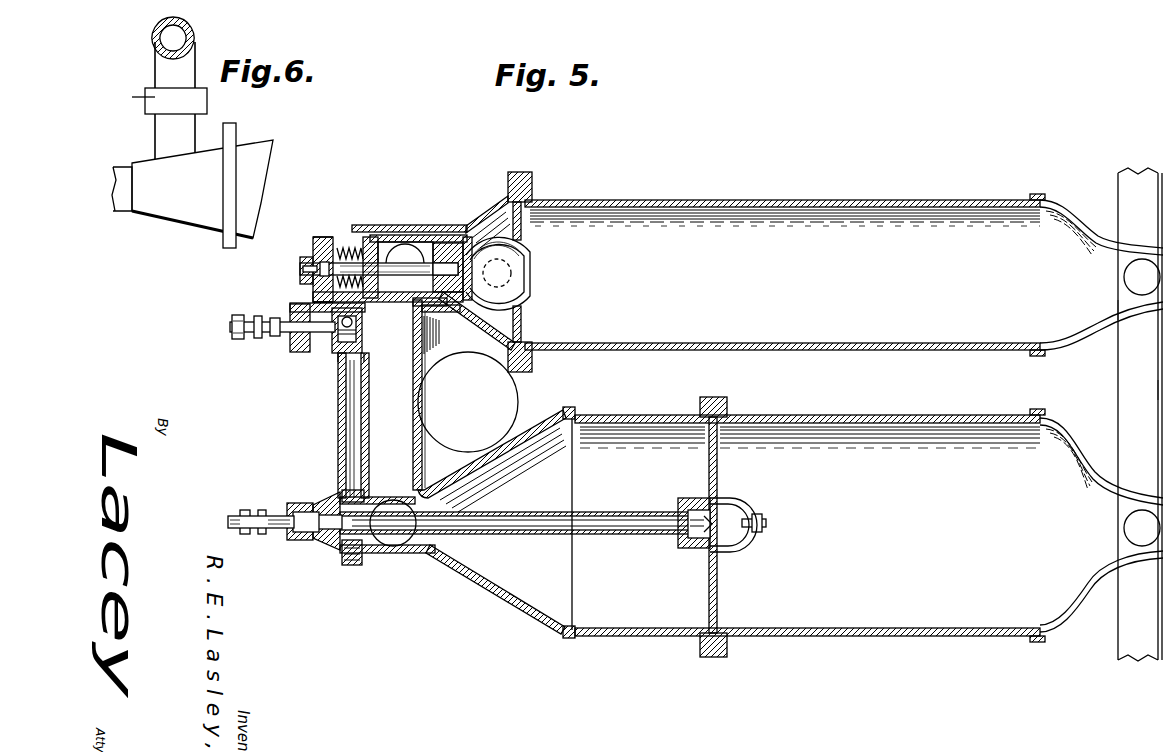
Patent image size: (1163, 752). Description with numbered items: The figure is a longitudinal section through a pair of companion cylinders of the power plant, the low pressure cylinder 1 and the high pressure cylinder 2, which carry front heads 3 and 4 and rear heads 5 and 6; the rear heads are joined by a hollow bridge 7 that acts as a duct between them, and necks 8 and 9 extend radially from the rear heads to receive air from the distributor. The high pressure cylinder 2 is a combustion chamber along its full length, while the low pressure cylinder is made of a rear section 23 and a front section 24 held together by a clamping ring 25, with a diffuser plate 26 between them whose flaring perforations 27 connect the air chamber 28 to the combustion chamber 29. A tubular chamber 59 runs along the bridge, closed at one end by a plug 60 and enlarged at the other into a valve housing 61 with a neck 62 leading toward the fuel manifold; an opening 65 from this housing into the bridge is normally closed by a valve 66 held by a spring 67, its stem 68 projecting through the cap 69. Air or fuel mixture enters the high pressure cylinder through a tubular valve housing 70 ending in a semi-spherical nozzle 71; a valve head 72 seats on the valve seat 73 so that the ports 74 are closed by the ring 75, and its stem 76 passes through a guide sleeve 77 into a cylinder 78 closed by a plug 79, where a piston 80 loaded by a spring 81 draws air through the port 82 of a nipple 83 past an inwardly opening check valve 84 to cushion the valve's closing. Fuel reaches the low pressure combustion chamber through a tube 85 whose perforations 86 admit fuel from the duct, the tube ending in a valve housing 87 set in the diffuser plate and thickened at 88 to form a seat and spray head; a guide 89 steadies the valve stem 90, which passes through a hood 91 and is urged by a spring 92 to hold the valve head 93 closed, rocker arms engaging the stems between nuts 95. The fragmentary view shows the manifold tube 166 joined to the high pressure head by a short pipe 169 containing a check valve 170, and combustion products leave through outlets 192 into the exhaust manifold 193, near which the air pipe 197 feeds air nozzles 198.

In FIG. 5, the low pressure cylinder 1 is at (937, 440).
In FIG. 6, the high pressure cylinder 2 is at (257, 157).
In FIG. 5, the high pressure cylinder 2 is at (770, 212).
In FIG. 5, the front head of low pressure cylinder 3 is at (1073, 443).
In FIG. 5, the front head of high pressure cylinder 4 is at (1070, 222).
In FIG. 5, the rear head of low pressure cylinder 5 is at (510, 602).
In FIG. 5, the rear head of high pressure cylinder 6 is at (487, 228).
In FIG. 5, the hollow bridge 7 is at (400, 412).
In FIG. 5, the neck of low pressure cylinder 8 is at (396, 541).
In FIG. 5, the neck of high pressure cylinder 9 is at (378, 231).
In FIG. 5, the rear section 23 is at (633, 417).
In FIG. 5, the front section 24 is at (815, 421).
In FIG. 5, the clamping ring 25 is at (730, 407).
In FIG. 5, the diffuser plate 26 is at (718, 578).
In FIG. 5, the perforations 27 is at (718, 473).
In FIG. 5, the air chamber 28 is at (612, 483).
In FIG. 5, the combustion chamber 29 is at (918, 556).
In FIG. 5, the tubular chamber 59 is at (343, 414).
In FIG. 5, the plug 60 is at (351, 562).
In FIG. 5, the valve housing 61 is at (337, 354).
In FIG. 5, the neck 62 is at (365, 342).
In FIG. 5, the opening 65 is at (364, 314).
In FIG. 5, the valve 66 is at (363, 328).
In FIG. 5, the spring 67 is at (292, 340).
In FIG. 5, the stem 68 is at (233, 336).
In FIG. 5, the cap 69 is at (294, 311).
In FIG. 5, the valve housing 70 is at (409, 236).
In FIG. 5, the nozzle 71 is at (527, 308).
In FIG. 5, the valve head 72 is at (502, 230).
In FIG. 5, the valve seat 73 is at (444, 304).
In FIG. 5, the ports 74 is at (476, 271).
In FIG. 5, the ring 75 is at (446, 262).
In FIG. 5, the valve stem 76 is at (406, 272).
In FIG. 5, the guide sleeve 77 is at (414, 258).
In FIG. 5, the cylinder 78 is at (326, 239).
In FIG. 5, the plug 79 is at (313, 246).
In FIG. 5, the piston 80 is at (364, 245).
In FIG. 5, the spring 81 is at (351, 247).
In FIG. 5, the port 82 is at (320, 275).
In FIG. 5, the nipple 83 is at (301, 260).
In FIG. 5, the check valve 84 is at (303, 269).
In FIG. 5, the tube 85 is at (497, 512).
In FIG. 5, the perforations 86 is at (362, 507).
In FIG. 5, the valve housing 87 is at (696, 498).
In FIG. 5, the valve seat and spray head 88 is at (746, 503).
In FIG. 5, the guide 89 is at (759, 549).
In FIG. 5, the valve stem 90 is at (232, 513).
In FIG. 5, the hood 91 is at (313, 502).
In FIG. 5, the spring 92 is at (300, 542).
In FIG. 5, the valve head 93 is at (702, 535).
In FIG. 5, the nuts 95 is at (258, 320).
In FIG. 6, the manifold tube 166 is at (193, 35).
In FIG. 6, the short pipe 169 is at (160, 66).
In FIG. 5, the short pipe 169 is at (524, 254).
In FIG. 6, the check valve 170 is at (152, 104).
In FIG. 5, the outlets 192 is at (1128, 280).
In FIG. 5, the exhaust manifold 193 is at (1127, 370).
In FIG. 5, the air pipe 197 is at (1146, 395).
In FIG. 5, the air nozzles 198 is at (1140, 414).